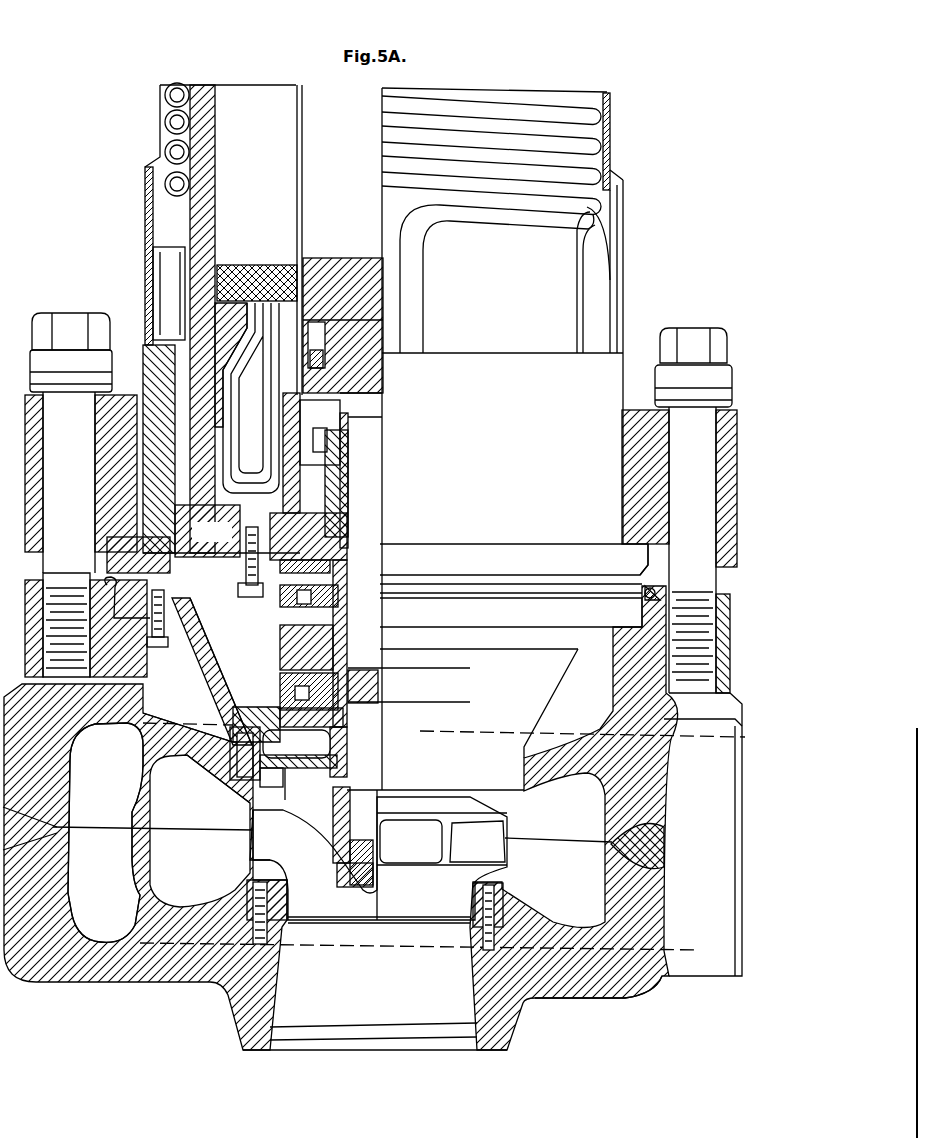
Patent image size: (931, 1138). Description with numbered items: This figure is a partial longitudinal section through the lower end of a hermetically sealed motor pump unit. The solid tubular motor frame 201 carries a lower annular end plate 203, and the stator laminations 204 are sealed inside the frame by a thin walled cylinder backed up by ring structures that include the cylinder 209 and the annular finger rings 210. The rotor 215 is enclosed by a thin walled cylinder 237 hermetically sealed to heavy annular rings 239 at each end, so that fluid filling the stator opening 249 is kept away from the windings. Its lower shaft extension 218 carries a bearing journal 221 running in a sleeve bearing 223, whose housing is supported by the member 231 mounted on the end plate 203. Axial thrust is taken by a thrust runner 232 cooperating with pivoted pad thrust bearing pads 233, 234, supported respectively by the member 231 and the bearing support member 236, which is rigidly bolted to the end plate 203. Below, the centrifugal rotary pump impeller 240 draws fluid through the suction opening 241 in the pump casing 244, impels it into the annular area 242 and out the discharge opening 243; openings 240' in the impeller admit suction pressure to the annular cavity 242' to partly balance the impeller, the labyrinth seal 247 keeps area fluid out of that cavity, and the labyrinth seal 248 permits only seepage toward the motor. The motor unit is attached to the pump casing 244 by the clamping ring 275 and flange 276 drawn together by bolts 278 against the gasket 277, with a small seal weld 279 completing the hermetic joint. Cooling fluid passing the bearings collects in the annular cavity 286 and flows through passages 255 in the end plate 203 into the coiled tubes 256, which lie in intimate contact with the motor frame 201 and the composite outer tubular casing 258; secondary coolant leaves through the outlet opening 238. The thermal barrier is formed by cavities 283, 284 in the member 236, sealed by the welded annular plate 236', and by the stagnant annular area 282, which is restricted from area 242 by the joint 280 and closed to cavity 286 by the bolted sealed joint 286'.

The motor frame 201 is at (203, 230).
The end plate 203 is at (150, 358).
The stator laminations 204 is at (228, 150).
The cylinder 209 is at (290, 445).
The annular finger rings 210 is at (222, 316).
The rotor 215 is at (368, 240).
The shaft extension 218 is at (373, 494).
The bearing journal 221 is at (347, 445).
The sleeve bearing 223 is at (343, 470).
The member 231 is at (330, 563).
The thrust runner 232 is at (327, 643).
The pivoted pad thrust bearing pads 233 is at (330, 618).
The pivoted pad thrust bearing pads 234 is at (330, 670).
The bearing support member 236 is at (349, 699).
The annular plate 236' is at (428, 814).
The thin walled cylinder 237 is at (302, 313).
The outlet opening 238 is at (147, 250).
The heavy annular rings 239 is at (307, 367).
The rotary pump impeller 240 is at (396, 870).
The openings 240' is at (330, 859).
The suction opening 241 is at (445, 1053).
The annular area 242 is at (374, 818).
The annular cavity 242' is at (281, 835).
The discharge opening 243 is at (740, 936).
The pump casing 244 is at (625, 992).
The labyrinth seal 247 is at (282, 787).
The labyrinth seal 248 is at (347, 763).
The stator opening 249 is at (302, 160).
The passages 255 is at (219, 551).
The coiled tubes 256 is at (167, 317).
The composite outer tubular casing 258 is at (163, 124).
The clamping ring 275 is at (732, 448).
The flange 276 is at (657, 559).
The gasket 277 is at (633, 629).
The bolts 278 is at (728, 350).
The seal weld 279 is at (658, 592).
The joint 280 is at (222, 767).
The annular area 282 is at (167, 713).
The cavity 283 is at (230, 768).
The cavity 284 is at (348, 757).
The annular cavity 286 is at (202, 671).
The bolted sealed joint 286' is at (170, 612).